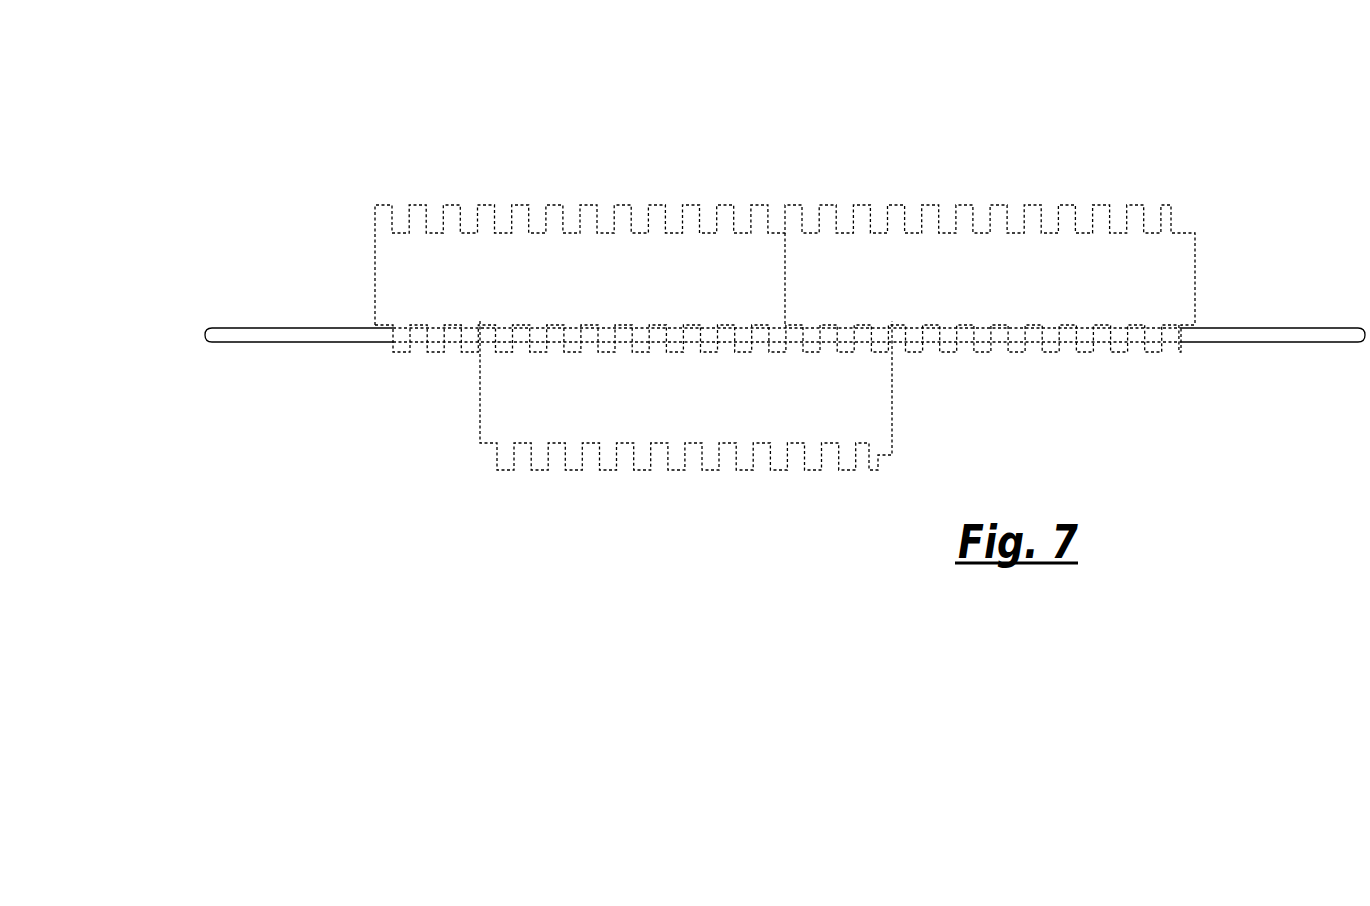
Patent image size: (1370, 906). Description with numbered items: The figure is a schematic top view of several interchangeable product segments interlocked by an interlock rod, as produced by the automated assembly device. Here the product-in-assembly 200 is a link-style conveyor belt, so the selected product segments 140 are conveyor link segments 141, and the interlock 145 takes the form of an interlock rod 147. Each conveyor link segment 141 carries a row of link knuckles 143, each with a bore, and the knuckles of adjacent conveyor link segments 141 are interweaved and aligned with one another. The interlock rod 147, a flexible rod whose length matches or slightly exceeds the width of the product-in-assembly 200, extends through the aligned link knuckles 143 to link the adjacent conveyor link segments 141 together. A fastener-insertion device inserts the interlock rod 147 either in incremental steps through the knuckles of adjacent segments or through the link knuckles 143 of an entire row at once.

The product-in-assembly 200 is at (522, 172).
The selected product segments 140 is at (1258, 123).
The conveyor link segment 141 is at (755, 347).
The link knuckles 143 is at (623, 222).
The interlock rod 147 is at (292, 332).
The interlock 145 is at (200, 437).